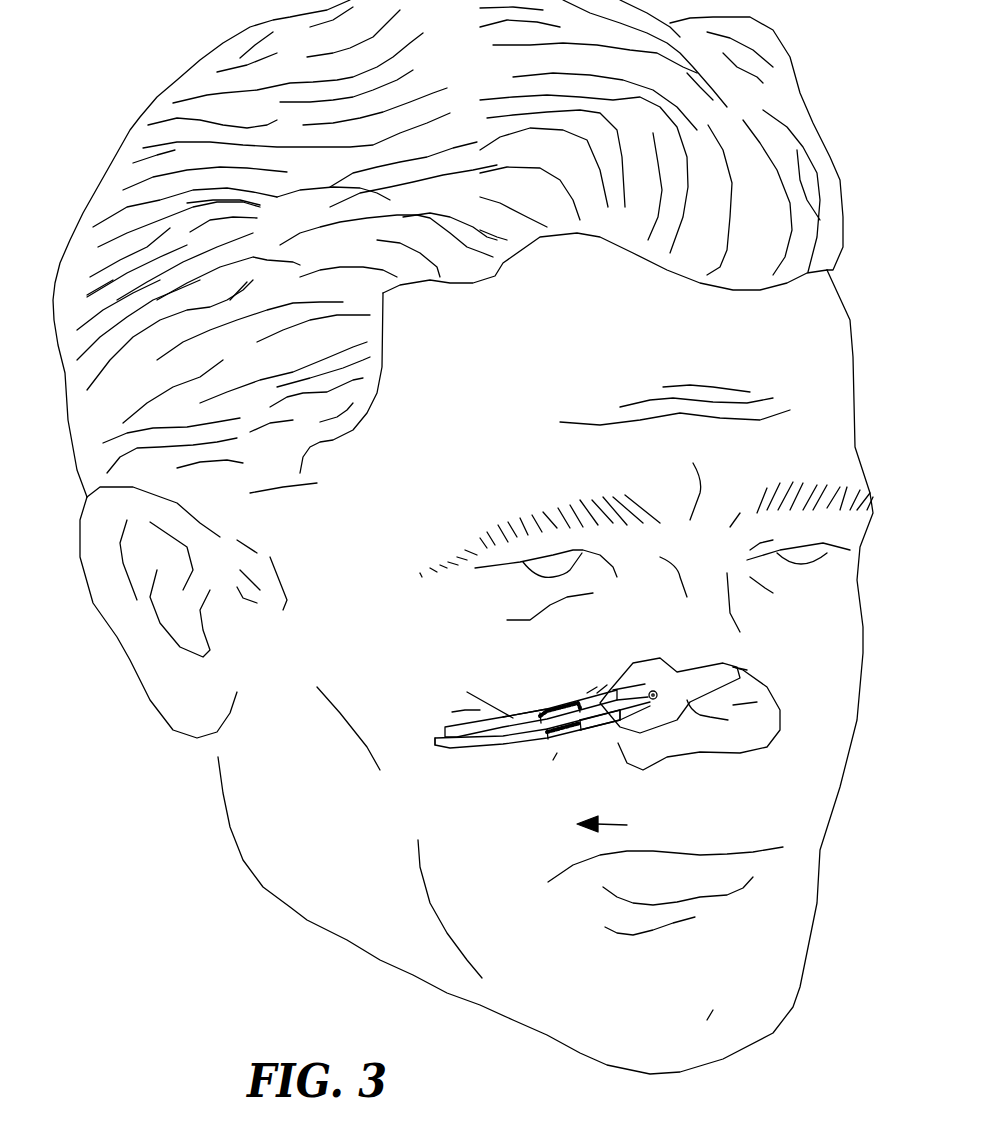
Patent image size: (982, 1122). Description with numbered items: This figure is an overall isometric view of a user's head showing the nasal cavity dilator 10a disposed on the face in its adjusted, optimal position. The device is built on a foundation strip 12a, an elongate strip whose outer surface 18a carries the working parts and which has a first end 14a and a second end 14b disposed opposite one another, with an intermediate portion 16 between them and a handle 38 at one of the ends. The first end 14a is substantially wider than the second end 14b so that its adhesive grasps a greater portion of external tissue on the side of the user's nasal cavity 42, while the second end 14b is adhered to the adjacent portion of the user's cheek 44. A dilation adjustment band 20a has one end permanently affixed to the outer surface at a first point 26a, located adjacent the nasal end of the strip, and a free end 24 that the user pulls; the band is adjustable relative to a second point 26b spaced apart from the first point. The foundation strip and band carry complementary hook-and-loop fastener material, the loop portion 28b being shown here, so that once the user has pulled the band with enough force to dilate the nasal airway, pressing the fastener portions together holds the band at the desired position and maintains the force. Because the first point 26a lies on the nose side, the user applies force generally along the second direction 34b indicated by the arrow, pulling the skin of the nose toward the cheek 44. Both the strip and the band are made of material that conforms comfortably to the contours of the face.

The nasal cavity dilator 10a is at (613, 758).
The foundation strip 12a is at (600, 730).
The first end 14a is at (728, 720).
The second end 14b is at (452, 752).
The intermediate portion 16 is at (570, 703).
The outer surface 18a is at (457, 730).
The dilation adjustment band 20a is at (633, 700).
The free end 24 is at (433, 738).
The first point 26a is at (677, 673).
The second point 26b is at (550, 740).
The loop portion 28b is at (543, 713).
The second direction 34b is at (621, 826).
The handle 38 is at (747, 670).
The nasal cavity 42 is at (757, 702).
The cheek 44 is at (447, 693).